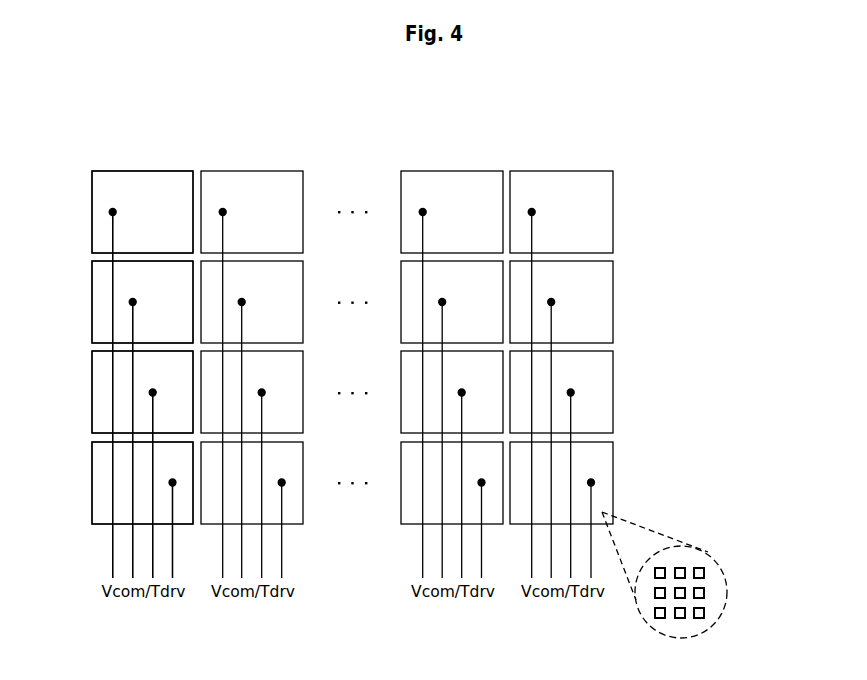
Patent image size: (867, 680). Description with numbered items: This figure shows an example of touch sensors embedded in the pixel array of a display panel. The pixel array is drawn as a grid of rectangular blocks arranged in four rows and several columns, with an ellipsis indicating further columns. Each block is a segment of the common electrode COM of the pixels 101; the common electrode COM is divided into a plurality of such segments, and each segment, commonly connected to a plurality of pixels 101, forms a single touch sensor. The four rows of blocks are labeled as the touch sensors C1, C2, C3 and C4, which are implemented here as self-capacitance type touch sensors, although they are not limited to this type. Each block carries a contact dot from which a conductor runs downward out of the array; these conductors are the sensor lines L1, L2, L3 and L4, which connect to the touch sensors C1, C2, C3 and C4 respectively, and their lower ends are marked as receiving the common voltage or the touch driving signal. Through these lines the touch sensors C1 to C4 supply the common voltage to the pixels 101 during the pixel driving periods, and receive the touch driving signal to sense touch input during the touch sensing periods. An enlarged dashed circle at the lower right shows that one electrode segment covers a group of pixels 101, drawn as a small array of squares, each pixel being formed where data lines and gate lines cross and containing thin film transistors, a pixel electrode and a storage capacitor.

The pixel 101 is at (705, 593).
The touch sensor C1 is at (132, 199).
The touch sensor C2 is at (133, 290).
The touch sensor C3 is at (162, 380).
The touch sensor C4 is at (162, 470).
The sensor line L1 is at (112, 234).
The sensor line L2 is at (132, 324).
The sensor line L3 is at (152, 415).
The sensor line L4 is at (172, 503).
The common electrode COM is at (178, 171).